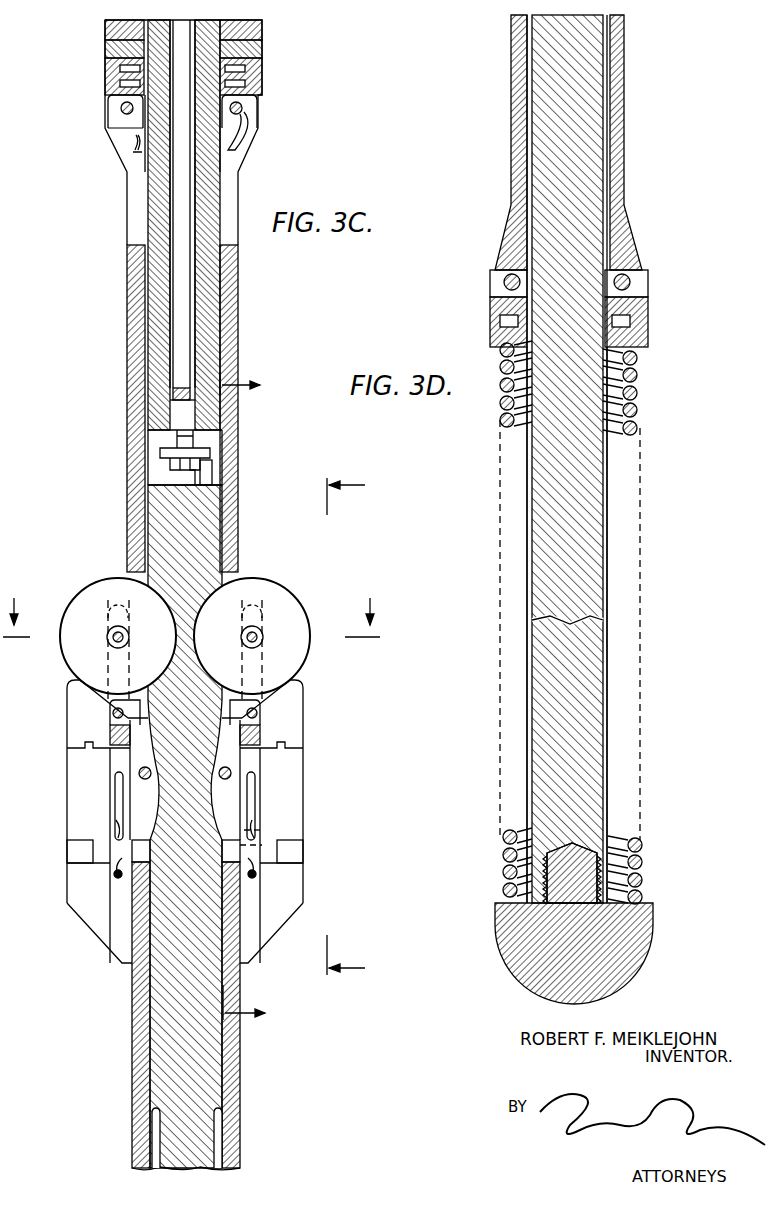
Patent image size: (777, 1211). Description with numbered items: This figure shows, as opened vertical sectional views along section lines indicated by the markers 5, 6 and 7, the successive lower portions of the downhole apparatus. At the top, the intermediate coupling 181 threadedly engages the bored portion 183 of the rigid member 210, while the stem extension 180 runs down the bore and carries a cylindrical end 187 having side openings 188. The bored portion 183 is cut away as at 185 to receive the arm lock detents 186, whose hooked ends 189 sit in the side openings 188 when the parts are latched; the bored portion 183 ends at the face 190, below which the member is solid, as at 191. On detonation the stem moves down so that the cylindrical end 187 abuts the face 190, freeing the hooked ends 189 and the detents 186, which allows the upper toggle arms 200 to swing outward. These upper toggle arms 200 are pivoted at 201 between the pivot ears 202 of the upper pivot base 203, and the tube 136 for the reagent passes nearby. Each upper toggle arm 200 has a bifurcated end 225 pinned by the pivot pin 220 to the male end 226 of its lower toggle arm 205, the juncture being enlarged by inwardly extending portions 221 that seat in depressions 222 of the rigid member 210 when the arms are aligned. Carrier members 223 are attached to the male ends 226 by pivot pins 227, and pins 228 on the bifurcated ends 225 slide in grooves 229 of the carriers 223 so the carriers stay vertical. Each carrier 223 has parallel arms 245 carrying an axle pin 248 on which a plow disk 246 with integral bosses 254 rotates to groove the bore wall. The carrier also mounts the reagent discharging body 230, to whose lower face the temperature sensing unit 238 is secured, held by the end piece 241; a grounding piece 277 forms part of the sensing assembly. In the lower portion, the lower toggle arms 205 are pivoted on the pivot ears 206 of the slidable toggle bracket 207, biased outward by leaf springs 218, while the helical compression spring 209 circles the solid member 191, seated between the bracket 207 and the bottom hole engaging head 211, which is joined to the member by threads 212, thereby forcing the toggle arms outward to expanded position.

In FIG. 3C, the intermediate coupling 181 is at (247, 32).
In FIG. 3C, the tube 136 is at (250, 70).
In FIG. 3C, the upper pivot base 203 is at (112, 70).
In FIG. 3C, the pivot ears 202 is at (112, 103).
In FIG. 3C, the pivot 201 is at (120, 110).
In FIG. 3C, the stem extension 180 is at (188, 178).
In FIG. 3C, the bored portion 183 is at (205, 321).
In FIG. 3C, the upper toggle arms 200 is at (232, 275).
In FIG. 3C, the arm lock detents 186 is at (158, 452).
In FIG. 3C, the side openings 188 is at (172, 436).
In FIG. 3C, the cylindrical end 187 is at (170, 470).
In FIG. 3C, the cut-away 185 is at (212, 472).
In FIG. 3C, the hooked ends 189 is at (176, 480).
In FIG. 3C, the face 190 is at (205, 492).
In FIG. 3C, the solid member 191 is at (210, 535).
In FIG. 3D, the solid member 191 is at (605, 525).
In FIG. 3C, the plow disk 246 is at (75, 665).
In FIG. 3C, the parallel arms 245 is at (108, 620).
In FIG. 3C, the axle pin 248 is at (110, 638).
In FIG. 3C, the bosses 254 is at (262, 637).
In FIG. 3C, the body 230 is at (80, 723).
In FIG. 3C, the male end 226 is at (265, 700).
In FIG. 3C, the pivot pins 227 is at (257, 713).
In FIG. 3C, the temperature sensing unit 238 is at (75, 815).
In FIG. 3C, the inwardly extending portions 221 is at (110, 768).
In FIG. 3C, the pivot pin 220 is at (115, 778).
In FIG. 3C, the depressions 222 is at (150, 775).
In FIG. 3C, the grooves 229 is at (116, 825).
In FIG. 3C, the pins 228 is at (262, 830).
In FIG. 3C, the bifurcated end 225 is at (270, 845).
In FIG. 3C, the piece 277 is at (80, 860).
In FIG. 3C, the end piece 241 is at (80, 897).
In FIG. 3C, the carrier members 223 is at (122, 960).
In FIG. 3C, the lower toggle arms 205 is at (145, 1069).
In FIG. 3D, the lower toggle arms 205 is at (620, 78).
In FIG. 3C, the rigid member 210 is at (170, 1005).
In FIG. 3D, the rigid member 210 is at (548, 85).
In FIG. 3C, the leaf springs 218 is at (155, 1145).
In FIG. 3C, the section line 7 is at (251, 698).
In FIG. 3C, the section line 6 is at (355, 727).
In FIG. 3C, the section line 5 is at (191, 606).
In FIG. 3D, the pivot ears 206 is at (650, 285).
In FIG. 3D, the lower slidable toggle bracket 207 is at (648, 322).
In FIG. 3D, the helical compression spring 209 is at (637, 392).
In FIG. 3D, the threads 212 is at (598, 862).
In FIG. 3D, the bottom hole engaging head 211 is at (640, 940).